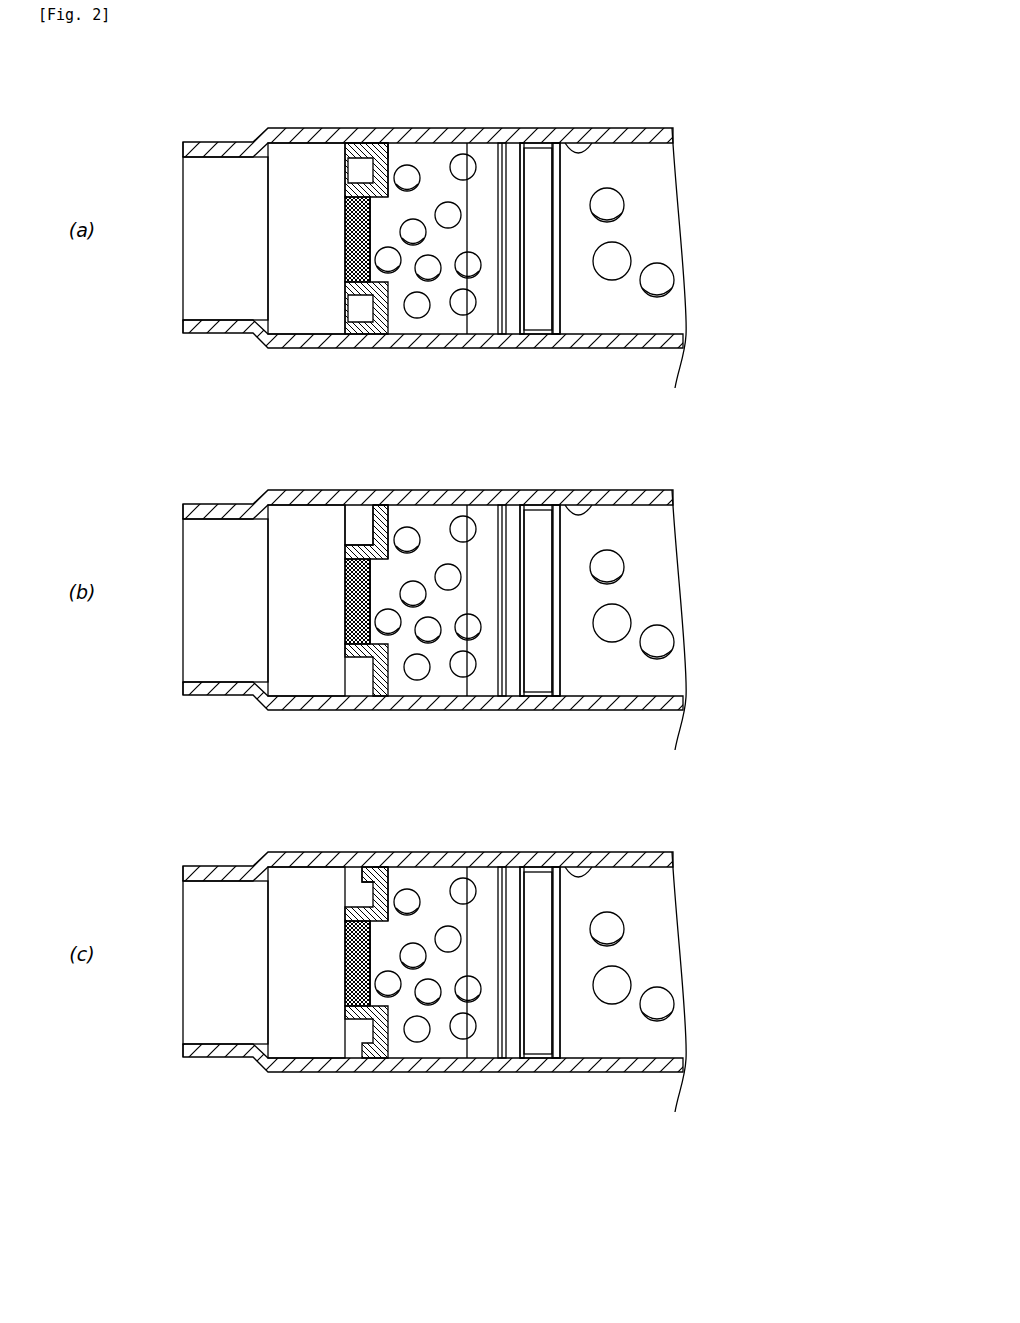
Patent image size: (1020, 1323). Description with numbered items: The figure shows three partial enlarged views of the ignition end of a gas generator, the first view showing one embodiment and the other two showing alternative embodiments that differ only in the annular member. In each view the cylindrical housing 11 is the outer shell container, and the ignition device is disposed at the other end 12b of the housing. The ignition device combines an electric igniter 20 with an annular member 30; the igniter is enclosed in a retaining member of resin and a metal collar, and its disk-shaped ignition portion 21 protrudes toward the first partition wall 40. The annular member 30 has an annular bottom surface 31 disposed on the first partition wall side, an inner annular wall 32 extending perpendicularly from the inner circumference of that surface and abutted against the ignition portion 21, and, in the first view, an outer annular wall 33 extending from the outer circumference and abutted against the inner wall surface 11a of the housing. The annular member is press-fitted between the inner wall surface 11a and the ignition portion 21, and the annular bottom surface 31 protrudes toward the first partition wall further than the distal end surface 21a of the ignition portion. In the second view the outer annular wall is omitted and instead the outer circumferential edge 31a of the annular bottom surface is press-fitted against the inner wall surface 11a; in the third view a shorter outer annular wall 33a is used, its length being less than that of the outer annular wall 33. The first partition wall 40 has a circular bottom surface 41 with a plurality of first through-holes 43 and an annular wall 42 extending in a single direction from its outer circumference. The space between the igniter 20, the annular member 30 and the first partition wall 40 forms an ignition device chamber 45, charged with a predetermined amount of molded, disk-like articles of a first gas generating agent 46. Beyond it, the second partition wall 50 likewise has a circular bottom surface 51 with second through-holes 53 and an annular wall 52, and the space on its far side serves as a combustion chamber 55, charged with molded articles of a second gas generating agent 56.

The cylindrical housing 11 is at (641, 128).
The inner wall surface 11a is at (598, 852).
The other end of the cylindrical housing 12b is at (183, 872).
The electric igniter 20 is at (238, 967).
The ignition portion 21 is at (345, 980).
The distal end surface of the ignition portion 21a is at (345, 940).
The annular member 30 is at (360, 340).
The annular bottom surface 31 is at (393, 146).
The outer circumferential edge of the annular bottom surface 31a is at (392, 512).
The inner annular wall 32 is at (384, 934).
The outer annular wall 33 is at (365, 140).
The outer annular wall 33a is at (378, 867).
The first partition wall 40 is at (517, 88).
The circular bottom surface 41 is at (520, 867).
The annular wall 42 is at (503, 867).
The first through-holes 43 is at (469, 936).
The ignition device chamber 45 is at (448, 888).
The first gas generating agent 46 is at (416, 308).
The second partition wall 50 is at (573, 392).
The circular bottom surface 51 is at (560, 1058).
The annular wall 52 is at (525, 1059).
The second through-holes 53 is at (560, 994).
The combustion chamber 55 is at (653, 903).
The second gas generating agent 56 is at (652, 992).